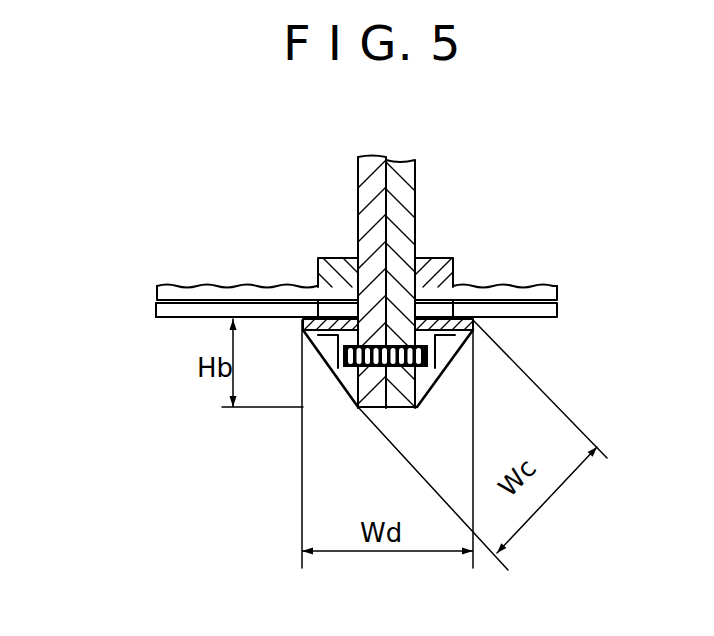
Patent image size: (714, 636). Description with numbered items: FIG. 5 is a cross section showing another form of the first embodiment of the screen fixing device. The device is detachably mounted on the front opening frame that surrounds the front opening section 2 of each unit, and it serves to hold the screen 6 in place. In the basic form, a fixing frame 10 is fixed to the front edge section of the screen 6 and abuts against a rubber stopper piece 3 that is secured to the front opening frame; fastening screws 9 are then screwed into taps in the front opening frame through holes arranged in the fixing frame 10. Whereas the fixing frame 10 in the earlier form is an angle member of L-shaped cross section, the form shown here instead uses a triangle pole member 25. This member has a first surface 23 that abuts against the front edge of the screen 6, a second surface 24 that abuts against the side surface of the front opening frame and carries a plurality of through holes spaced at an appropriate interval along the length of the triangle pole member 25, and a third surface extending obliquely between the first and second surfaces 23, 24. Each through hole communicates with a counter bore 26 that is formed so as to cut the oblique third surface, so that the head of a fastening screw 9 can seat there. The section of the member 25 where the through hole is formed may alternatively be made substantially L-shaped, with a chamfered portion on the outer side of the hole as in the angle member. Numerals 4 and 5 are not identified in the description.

The front opening section 2 is at (357, 182).
The rubber stopper piece 3 is at (325, 258).
The upper plate 4 is at (178, 290).
The lower plate 5 is at (187, 313).
The screen 6 is at (152, 320).
The fastening screw 9 is at (332, 395).
The fixing frame 10 is at (338, 398).
The first surface 23 is at (327, 322).
The second surface 24 is at (378, 370).
The triangle pole member 25 is at (303, 330).
The counter bore 26 is at (318, 342).